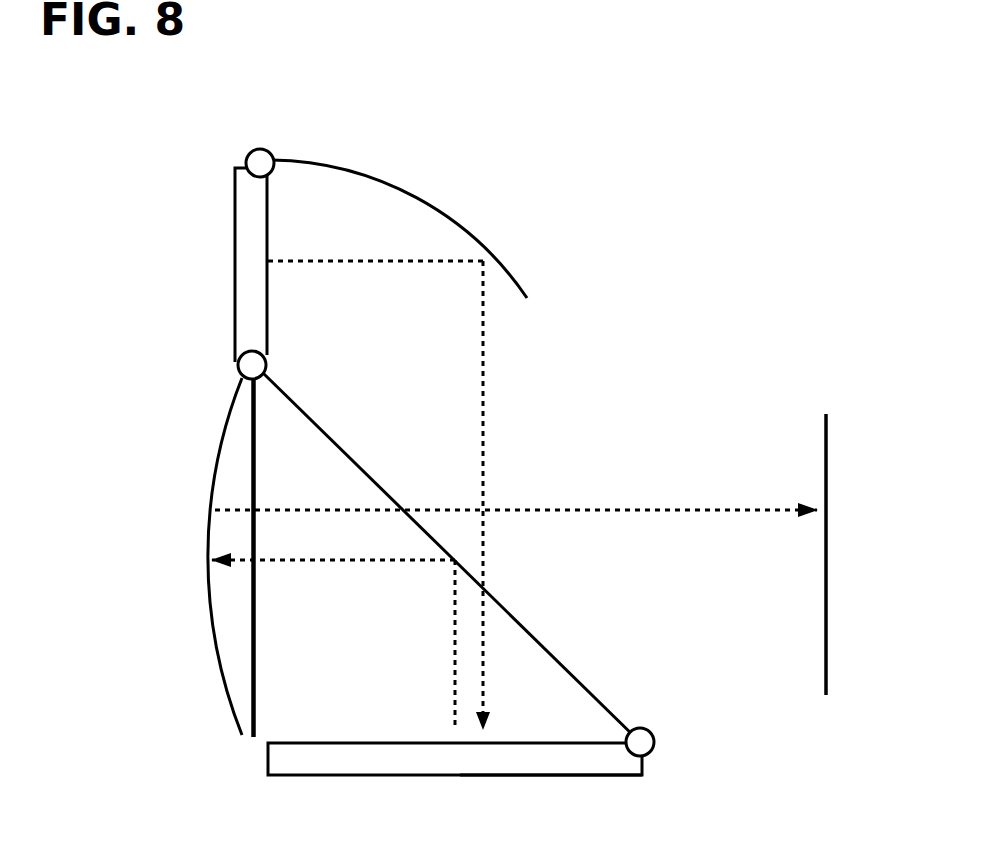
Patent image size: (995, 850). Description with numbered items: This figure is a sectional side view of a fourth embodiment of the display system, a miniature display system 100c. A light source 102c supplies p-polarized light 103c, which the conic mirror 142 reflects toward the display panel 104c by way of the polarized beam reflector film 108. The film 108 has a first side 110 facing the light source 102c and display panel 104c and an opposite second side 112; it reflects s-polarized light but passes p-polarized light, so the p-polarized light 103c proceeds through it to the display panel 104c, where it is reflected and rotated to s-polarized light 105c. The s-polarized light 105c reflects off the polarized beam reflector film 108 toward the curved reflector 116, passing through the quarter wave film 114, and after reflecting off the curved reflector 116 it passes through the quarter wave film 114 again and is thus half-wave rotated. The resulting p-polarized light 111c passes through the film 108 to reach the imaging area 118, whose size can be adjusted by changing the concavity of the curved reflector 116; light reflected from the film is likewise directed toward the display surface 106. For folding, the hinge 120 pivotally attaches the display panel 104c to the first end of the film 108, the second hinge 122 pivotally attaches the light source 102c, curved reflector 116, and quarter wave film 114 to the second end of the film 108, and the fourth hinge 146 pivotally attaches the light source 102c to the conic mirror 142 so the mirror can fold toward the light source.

The miniature display system 100c is at (766, 188).
The light source 102c is at (235, 223).
The p-polarized light 103c is at (413, 262).
The display panel 104c is at (603, 775).
The s-polarized light 105c is at (420, 561).
The display surface 106 is at (368, 743).
The polarized beam reflector film 108 is at (553, 657).
The first side 110 is at (355, 477).
The p-polarized light 111c is at (670, 508).
The second side 112 is at (357, 448).
The quarter wave film 114 is at (257, 635).
The curved reflector 116 is at (213, 636).
The imaging area 118 is at (826, 630).
The hinge 120 is at (655, 736).
The second hinge 122 is at (238, 365).
The conic mirror 142 is at (470, 237).
The fourth hinge 146 is at (258, 149).